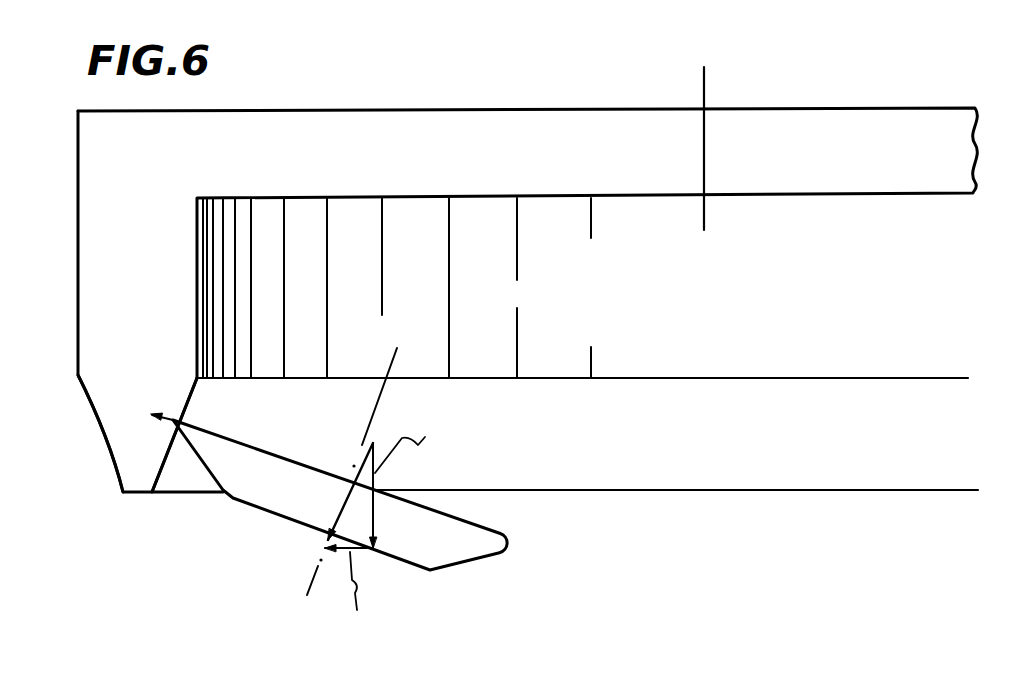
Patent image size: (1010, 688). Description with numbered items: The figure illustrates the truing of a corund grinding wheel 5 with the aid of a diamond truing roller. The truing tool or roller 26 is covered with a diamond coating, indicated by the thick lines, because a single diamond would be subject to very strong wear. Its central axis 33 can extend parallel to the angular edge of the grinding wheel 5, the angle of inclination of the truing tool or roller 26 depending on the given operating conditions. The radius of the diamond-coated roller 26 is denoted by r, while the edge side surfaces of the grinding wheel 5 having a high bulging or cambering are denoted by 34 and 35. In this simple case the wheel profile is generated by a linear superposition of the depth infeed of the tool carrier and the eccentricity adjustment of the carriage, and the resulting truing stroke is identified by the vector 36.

The grinding wheel 5 is at (90, 281).
The truing tool or roller 26 is at (292, 472).
The central axis 33 is at (377, 400).
The edge side surface 34 is at (108, 432).
The edge side surface 35 is at (160, 470).
The vector 36 is at (340, 497).